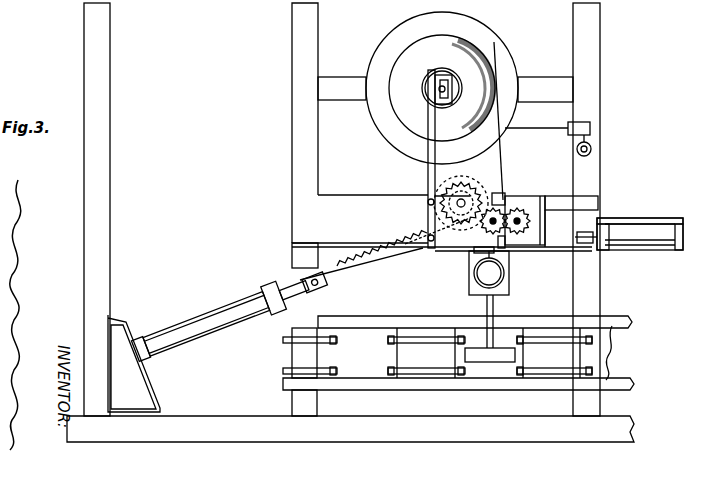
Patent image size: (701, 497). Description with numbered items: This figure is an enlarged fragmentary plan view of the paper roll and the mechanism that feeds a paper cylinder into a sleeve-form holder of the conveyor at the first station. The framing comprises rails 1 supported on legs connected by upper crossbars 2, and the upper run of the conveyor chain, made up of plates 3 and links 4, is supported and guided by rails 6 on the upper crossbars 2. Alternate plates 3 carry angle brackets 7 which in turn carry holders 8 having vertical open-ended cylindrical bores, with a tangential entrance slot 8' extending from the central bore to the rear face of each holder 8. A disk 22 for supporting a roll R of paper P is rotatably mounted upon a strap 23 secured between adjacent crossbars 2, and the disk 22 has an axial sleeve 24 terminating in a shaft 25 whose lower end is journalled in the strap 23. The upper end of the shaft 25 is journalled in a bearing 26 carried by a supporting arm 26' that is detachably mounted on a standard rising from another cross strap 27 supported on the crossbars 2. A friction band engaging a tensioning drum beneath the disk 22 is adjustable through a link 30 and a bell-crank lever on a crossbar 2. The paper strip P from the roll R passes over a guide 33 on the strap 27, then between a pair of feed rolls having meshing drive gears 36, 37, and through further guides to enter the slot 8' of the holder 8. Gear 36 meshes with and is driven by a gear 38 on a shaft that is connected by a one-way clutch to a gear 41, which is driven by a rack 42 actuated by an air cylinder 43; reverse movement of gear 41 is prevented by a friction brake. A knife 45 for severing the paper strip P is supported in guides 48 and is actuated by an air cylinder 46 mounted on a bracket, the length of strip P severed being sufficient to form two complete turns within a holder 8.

The rails 1 is at (238, 412).
The upper crossbars 2 is at (108, 249).
The plates 3 is at (356, 336).
The links 4 is at (292, 350).
The rails 6 is at (607, 353).
The angle brackets 7 is at (487, 306).
The holder 8 is at (502, 273).
The tangential entrance slot 8' is at (511, 263).
The disk 22 is at (487, 33).
The strap 23 is at (546, 82).
The axial sleeve 24 is at (466, 78).
The shaft 25 is at (440, 91).
The bearing 26 is at (442, 77).
The supporting arm 26' is at (412, 159).
The cross strap 27 is at (340, 202).
The link 30 is at (528, 130).
The guide 33 is at (497, 242).
The drive gear 36 is at (500, 214).
The drive gear 37 is at (527, 211).
The gear 38 is at (461, 197).
The gear 41 is at (472, 192).
The rack 42 is at (376, 262).
The air cylinder 43 is at (200, 324).
The knife 45 is at (540, 247).
The air cylinder 46 is at (630, 248).
The guides 48 is at (478, 250).
The paper strip P is at (503, 172).
The roll of paper R is at (456, 86).